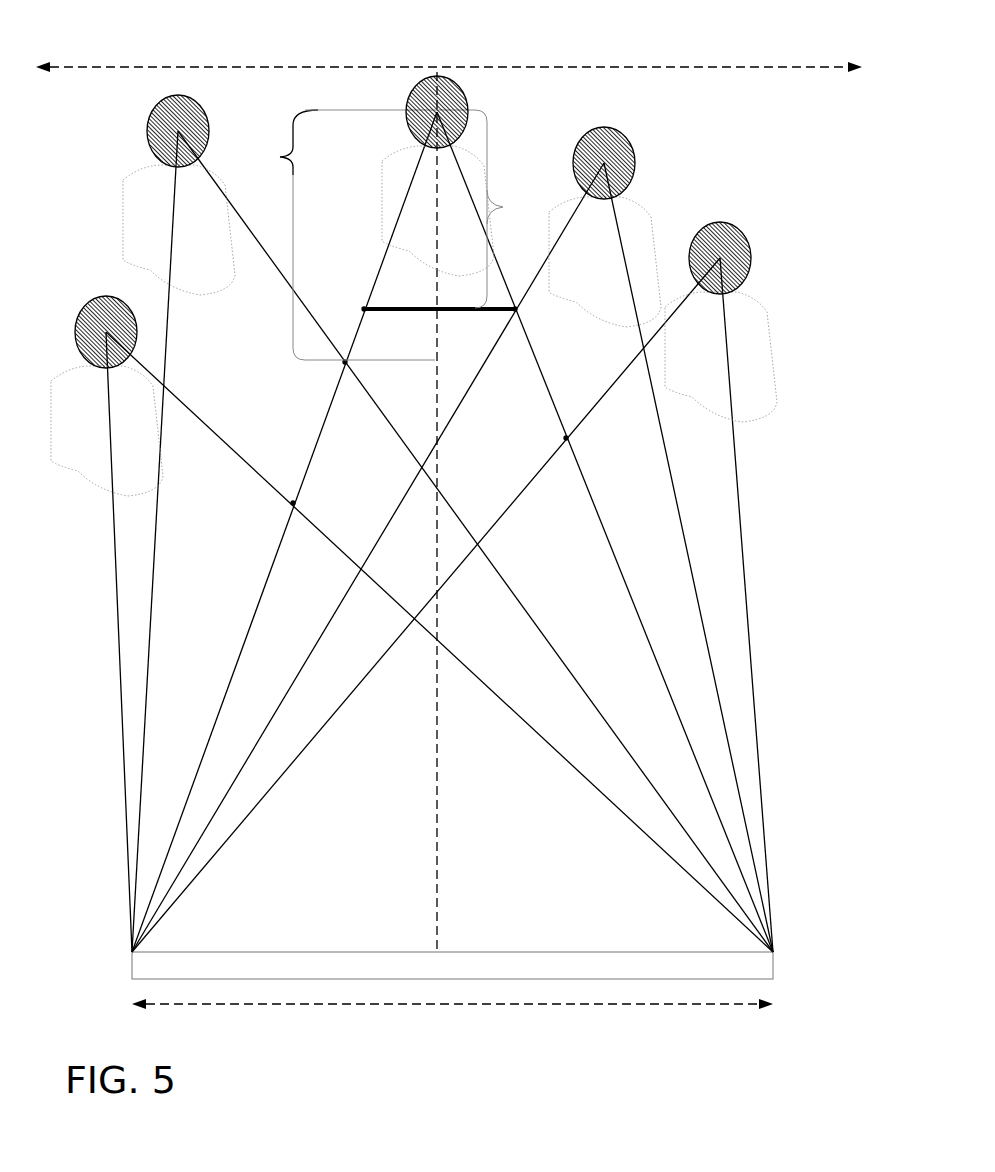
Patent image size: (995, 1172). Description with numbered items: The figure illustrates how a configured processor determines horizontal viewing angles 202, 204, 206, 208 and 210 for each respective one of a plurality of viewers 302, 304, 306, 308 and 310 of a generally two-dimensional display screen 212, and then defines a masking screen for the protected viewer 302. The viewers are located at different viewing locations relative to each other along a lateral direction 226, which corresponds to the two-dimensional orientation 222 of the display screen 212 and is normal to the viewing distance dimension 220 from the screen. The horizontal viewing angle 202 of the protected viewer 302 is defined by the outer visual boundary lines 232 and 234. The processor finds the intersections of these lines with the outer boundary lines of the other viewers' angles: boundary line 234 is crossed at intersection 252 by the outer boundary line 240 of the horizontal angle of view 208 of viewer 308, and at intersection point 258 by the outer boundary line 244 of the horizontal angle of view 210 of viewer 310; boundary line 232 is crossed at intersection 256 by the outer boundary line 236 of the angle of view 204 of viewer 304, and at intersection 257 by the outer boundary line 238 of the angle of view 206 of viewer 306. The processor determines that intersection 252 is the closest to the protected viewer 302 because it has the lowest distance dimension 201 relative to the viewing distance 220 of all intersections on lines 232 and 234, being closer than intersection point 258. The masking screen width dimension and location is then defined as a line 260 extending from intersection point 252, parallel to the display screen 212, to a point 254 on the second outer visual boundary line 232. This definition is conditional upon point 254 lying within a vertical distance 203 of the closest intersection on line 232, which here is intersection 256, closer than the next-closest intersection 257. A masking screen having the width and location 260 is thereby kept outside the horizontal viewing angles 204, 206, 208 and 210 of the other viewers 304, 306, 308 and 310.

The lowest distance dimension 201 is at (521, 207).
The horizontal viewing angle 202 is at (431, 109).
The vertical distance 203 is at (280, 157).
The horizontal viewing angle 204 is at (172, 128).
The horizontal viewing angle 206 is at (105, 325).
The horizontal viewing angle 208 is at (599, 158).
The horizontal viewing angle 210 is at (726, 252).
The two-dimensional display screen 212 is at (292, 962).
The viewing distance dimension 220 is at (432, 836).
The two-dimensional orientation 222 is at (316, 1005).
The lateral direction 226 is at (262, 66).
The outer visual boundary line 232 is at (268, 566).
The outer visual boundary line 234 is at (616, 556).
The outer boundary line 236 is at (280, 272).
The outer boundary line 238 is at (238, 456).
The outer boundary line 240 is at (478, 375).
The outer boundary line 244 is at (508, 512).
The intersection 252 is at (522, 316).
The point 254 is at (361, 302).
The intersection 256 is at (340, 367).
The intersection 257 is at (300, 501).
The intersection point 258 is at (560, 440).
The masking screen width dimension and location 260 is at (418, 313).
The protected viewer 302 is at (397, 177).
The viewer 304 is at (137, 202).
The viewer 306 is at (103, 478).
The viewer 308 is at (640, 225).
The viewer 310 is at (745, 318).